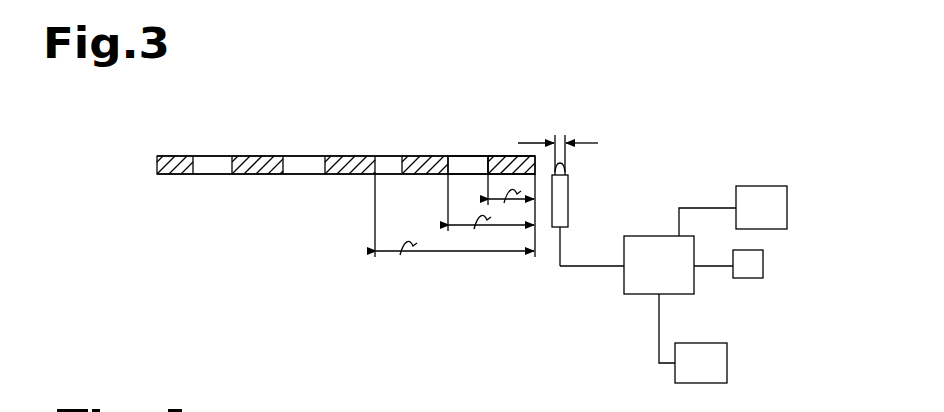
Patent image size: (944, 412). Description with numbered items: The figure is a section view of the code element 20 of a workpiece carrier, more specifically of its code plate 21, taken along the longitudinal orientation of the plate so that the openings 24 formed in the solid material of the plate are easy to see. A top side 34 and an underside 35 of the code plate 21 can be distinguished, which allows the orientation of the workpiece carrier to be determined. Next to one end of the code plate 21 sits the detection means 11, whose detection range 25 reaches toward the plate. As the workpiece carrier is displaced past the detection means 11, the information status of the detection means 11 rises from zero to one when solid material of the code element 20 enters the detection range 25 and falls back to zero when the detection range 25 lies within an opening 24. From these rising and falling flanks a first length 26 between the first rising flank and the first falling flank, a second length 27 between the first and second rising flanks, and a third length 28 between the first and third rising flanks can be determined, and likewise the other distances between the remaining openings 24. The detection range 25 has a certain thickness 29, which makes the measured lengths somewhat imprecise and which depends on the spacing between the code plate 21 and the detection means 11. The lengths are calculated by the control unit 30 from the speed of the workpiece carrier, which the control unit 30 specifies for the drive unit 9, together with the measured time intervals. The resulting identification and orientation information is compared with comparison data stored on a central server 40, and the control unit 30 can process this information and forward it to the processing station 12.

The code element 20 is at (476, 112).
The code plate 21 is at (505, 158).
The openings 24 is at (463, 157).
The detection range 25 is at (567, 168).
The first length 26 is at (508, 199).
The second length 27 is at (480, 225).
The third length 28 is at (407, 247).
The thickness 29 is at (562, 140).
The detection means 11 is at (560, 198).
The control unit 30 is at (641, 290).
The processing station 12 is at (770, 203).
The drive unit 9 is at (755, 265).
The central server 40 is at (710, 364).
The top side 34 is at (264, 154).
The underside 35 is at (264, 176).